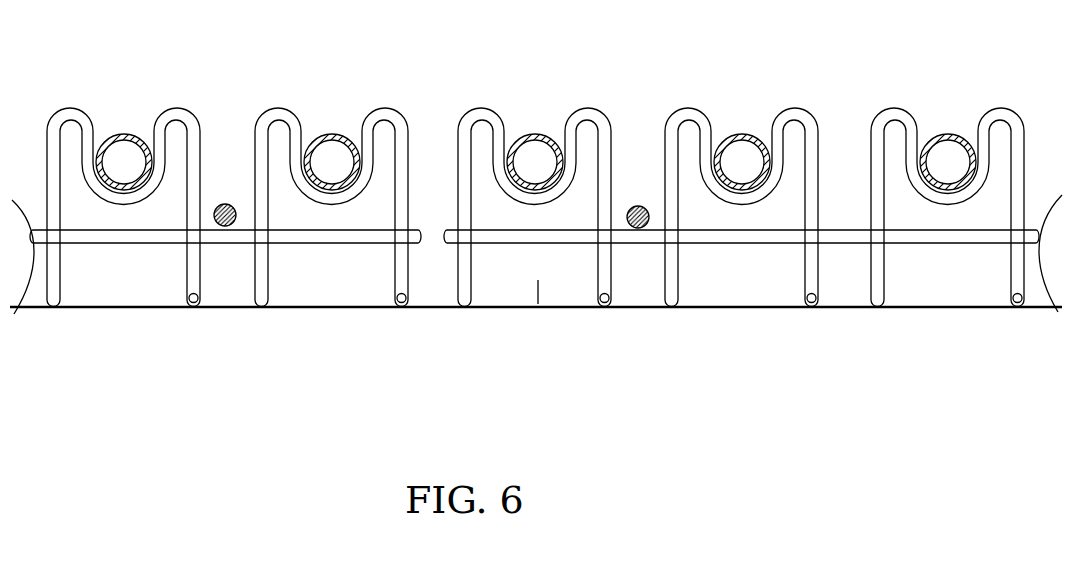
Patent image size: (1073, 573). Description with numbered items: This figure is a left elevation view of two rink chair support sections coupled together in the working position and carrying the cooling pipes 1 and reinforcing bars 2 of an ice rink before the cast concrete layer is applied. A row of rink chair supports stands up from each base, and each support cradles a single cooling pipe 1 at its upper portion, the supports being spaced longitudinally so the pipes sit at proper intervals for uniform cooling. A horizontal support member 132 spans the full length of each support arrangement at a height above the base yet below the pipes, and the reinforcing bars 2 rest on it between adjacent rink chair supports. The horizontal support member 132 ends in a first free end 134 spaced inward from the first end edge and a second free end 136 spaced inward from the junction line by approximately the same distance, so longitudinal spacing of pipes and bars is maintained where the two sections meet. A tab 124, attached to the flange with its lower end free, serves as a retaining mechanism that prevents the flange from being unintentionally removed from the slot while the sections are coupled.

The cooling pipes 1 is at (125, 105).
The reinforcing bars 2 is at (227, 193).
The tab 124 is at (526, 282).
The horizontal support member 132 is at (222, 253).
The first free end 134 is at (447, 252).
The second free end 136 is at (415, 253).